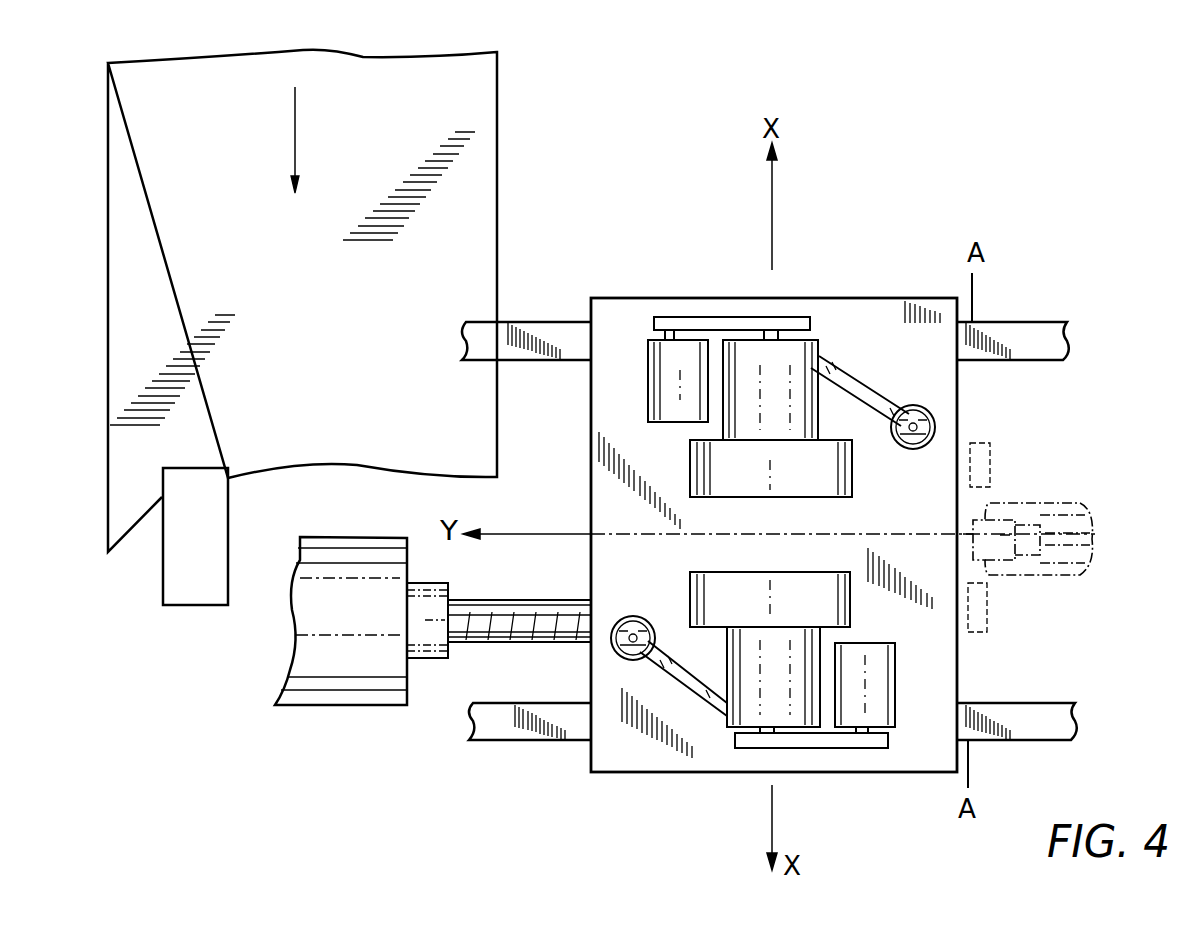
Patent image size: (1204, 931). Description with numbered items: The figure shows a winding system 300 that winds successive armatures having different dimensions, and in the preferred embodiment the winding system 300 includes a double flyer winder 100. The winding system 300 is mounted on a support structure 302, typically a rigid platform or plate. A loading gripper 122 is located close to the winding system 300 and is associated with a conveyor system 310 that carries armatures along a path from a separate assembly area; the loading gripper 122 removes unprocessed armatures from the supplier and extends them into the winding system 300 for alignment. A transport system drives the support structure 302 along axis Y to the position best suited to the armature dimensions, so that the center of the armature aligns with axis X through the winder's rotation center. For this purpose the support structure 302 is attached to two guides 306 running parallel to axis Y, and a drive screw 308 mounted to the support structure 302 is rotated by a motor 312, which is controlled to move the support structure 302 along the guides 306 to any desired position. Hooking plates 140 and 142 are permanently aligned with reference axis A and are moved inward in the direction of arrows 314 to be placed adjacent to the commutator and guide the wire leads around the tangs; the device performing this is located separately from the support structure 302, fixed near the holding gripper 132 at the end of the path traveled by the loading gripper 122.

The double flyer winder 100 is at (925, 373).
The loading gripper 122 is at (215, 465).
The holding gripper 132 is at (1042, 497).
The hooking plate 140 is at (1002, 438).
The hooking plate 142 is at (972, 633).
The winding system 300 is at (967, 186).
The support structure 302 is at (702, 297).
The guides 306 is at (1022, 325).
The drive screw 308 is at (485, 647).
The conveyor system 310 is at (497, 150).
The motor 312 is at (318, 705).
The arrows 314 is at (1013, 529).